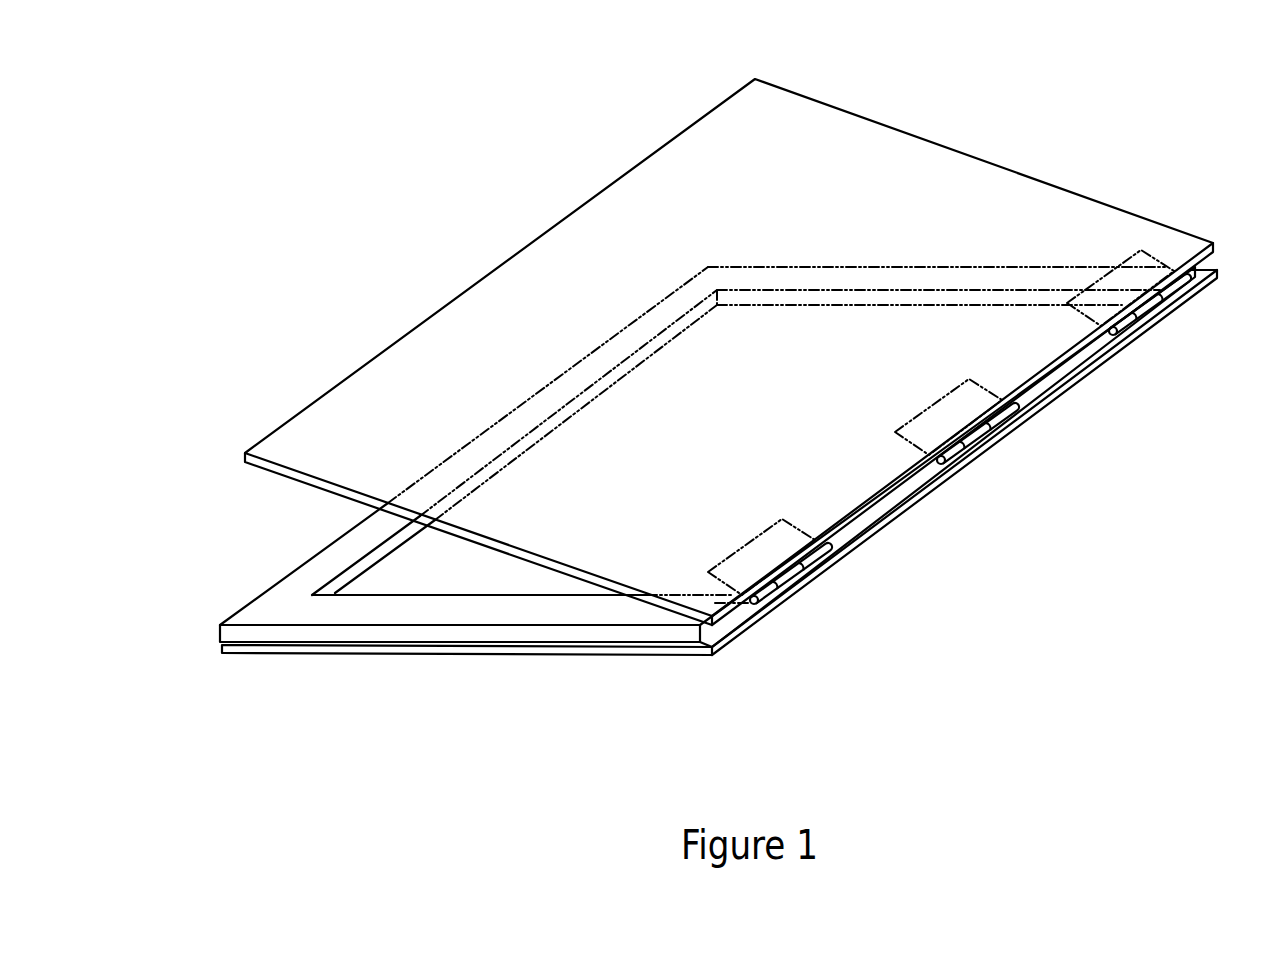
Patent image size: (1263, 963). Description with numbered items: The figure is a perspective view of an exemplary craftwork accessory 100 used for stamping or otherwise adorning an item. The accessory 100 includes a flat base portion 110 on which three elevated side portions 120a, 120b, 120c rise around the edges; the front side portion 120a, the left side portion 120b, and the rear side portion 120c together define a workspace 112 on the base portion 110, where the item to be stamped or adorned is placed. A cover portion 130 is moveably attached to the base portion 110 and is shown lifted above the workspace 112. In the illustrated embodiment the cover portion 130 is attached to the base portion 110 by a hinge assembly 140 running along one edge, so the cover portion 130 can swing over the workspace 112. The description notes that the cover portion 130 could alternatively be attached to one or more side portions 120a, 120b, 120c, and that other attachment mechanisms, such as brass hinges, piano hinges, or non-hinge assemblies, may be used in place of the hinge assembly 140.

The craftwork accessory 100 is at (985, 110).
The base portion 110 is at (702, 648).
The workspace 112 is at (432, 577).
The elevated side portion 120a is at (476, 633).
The elevated side portion 120b is at (526, 416).
The elevated side portion 120c is at (870, 262).
The cover portion 130 is at (800, 95).
The hinge assembly 140 is at (797, 571).